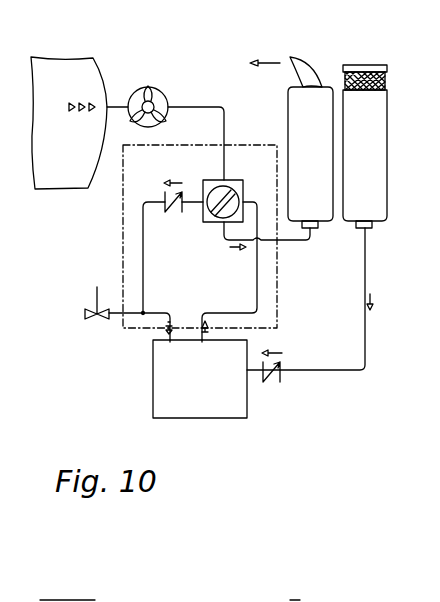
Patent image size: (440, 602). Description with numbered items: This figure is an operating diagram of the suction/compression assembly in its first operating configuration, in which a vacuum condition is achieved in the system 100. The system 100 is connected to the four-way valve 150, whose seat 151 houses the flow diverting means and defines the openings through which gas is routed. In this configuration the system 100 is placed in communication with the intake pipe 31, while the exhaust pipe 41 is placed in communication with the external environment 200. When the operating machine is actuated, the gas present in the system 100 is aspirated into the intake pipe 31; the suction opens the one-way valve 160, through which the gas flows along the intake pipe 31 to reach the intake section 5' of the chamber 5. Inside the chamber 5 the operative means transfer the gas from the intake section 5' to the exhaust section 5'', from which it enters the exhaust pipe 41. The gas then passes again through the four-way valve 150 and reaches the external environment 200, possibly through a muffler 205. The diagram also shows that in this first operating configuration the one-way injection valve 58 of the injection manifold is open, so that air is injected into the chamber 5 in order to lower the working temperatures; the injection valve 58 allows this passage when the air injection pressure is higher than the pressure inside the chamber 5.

The system 100 is at (77, 151).
The four-way valve 150 is at (203, 178).
The seat 151 is at (238, 192).
The one-way valve 160 is at (176, 221).
The intake pipe 31 is at (135, 268).
The exhaust pipe 41 is at (261, 279).
The chamber 5 is at (200, 379).
The intake section 5' is at (131, 364).
The exhaust section 5'' is at (157, 379).
The external environment 200 is at (277, 34).
The muffler 205 is at (315, 98).
The injection valve 58 is at (273, 385).